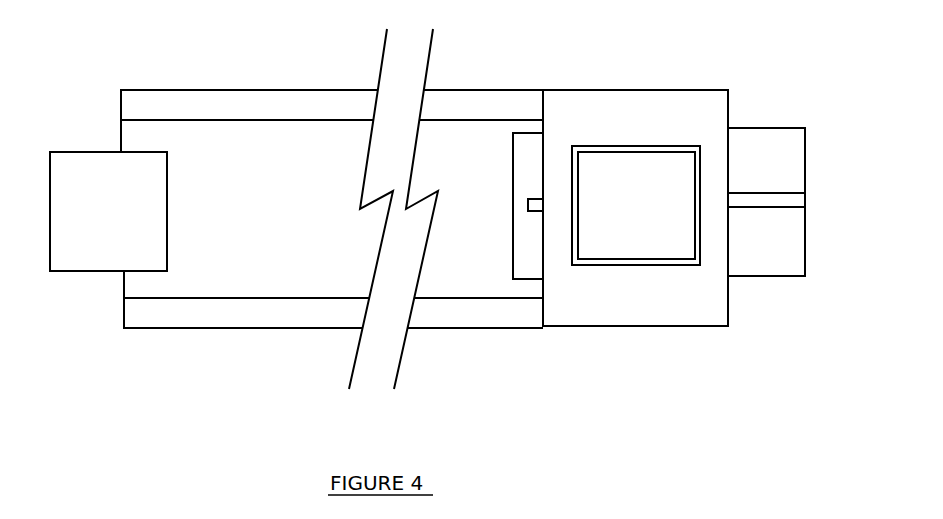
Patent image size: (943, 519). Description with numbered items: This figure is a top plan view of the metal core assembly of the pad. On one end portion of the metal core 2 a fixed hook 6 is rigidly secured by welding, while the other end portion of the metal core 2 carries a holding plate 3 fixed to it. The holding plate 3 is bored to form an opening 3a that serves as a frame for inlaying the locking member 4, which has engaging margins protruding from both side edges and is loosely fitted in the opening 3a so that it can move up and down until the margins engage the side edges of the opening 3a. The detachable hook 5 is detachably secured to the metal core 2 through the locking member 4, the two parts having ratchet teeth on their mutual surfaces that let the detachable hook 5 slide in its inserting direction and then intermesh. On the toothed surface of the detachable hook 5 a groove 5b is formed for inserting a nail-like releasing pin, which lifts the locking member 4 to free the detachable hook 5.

The metal core 2 is at (252, 105).
The holding plate 3 is at (573, 123).
The opening 3a is at (640, 262).
The locking member 4 is at (653, 173).
The detachable hook 5 is at (767, 259).
The groove 5b is at (797, 199).
The fixed hook 6 is at (87, 257).